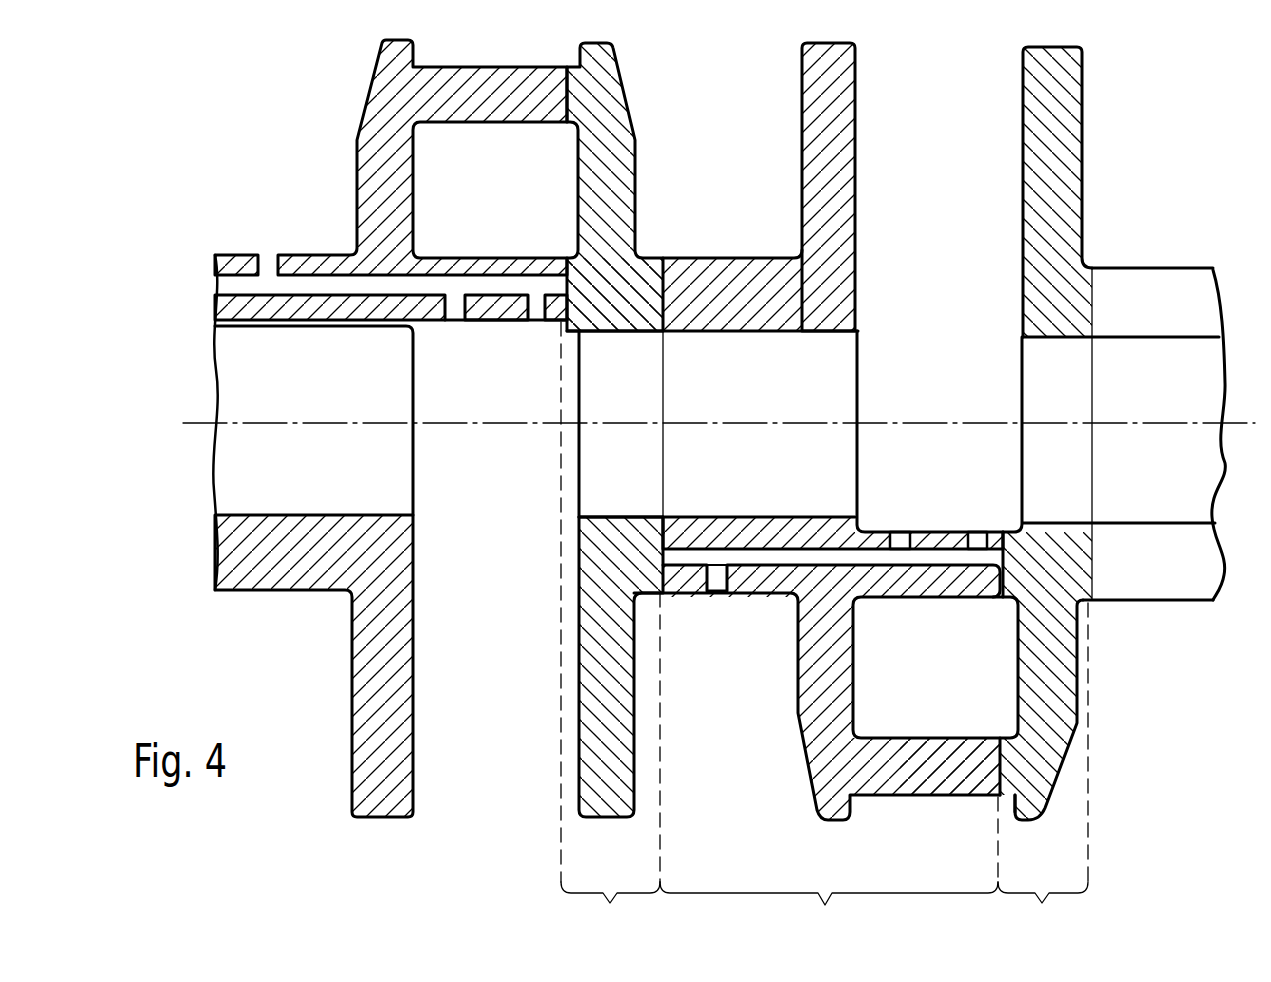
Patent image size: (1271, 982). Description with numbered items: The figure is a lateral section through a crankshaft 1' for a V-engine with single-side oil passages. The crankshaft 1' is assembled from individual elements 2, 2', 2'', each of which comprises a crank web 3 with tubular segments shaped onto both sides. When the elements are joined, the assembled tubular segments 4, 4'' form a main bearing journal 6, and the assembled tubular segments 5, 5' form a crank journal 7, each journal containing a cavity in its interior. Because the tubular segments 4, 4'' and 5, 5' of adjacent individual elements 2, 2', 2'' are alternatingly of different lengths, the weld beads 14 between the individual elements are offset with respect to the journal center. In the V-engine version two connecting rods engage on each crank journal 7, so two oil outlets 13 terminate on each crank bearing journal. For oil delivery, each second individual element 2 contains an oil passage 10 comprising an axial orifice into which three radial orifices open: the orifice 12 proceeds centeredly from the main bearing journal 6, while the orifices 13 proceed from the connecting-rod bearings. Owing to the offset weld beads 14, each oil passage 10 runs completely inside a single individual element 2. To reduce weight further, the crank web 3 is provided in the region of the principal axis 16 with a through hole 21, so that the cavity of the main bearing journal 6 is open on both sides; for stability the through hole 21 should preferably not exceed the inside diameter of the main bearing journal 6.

The crankshaft 1' is at (390, 476).
The individual element 2 is at (829, 488).
The adjacent individual element 2' is at (1045, 737).
The adjacent individual element 2'' is at (612, 490).
The crank web 3 is at (1047, 107).
The tubular segment 4 is at (732, 257).
The tubular segment 4'' is at (625, 257).
The tubular segment 5 is at (901, 799).
The tubular segment 5' is at (1031, 820).
The main bearing journal 6 is at (725, 287).
The crank journal 7 is at (950, 767).
The oil passage 10 is at (760, 560).
The radial orifice 12 is at (717, 582).
The radial orifice 13 is at (898, 543).
The weld bead 14 is at (670, 532).
The principal axis 16 is at (947, 430).
The through hole 21 is at (830, 387).